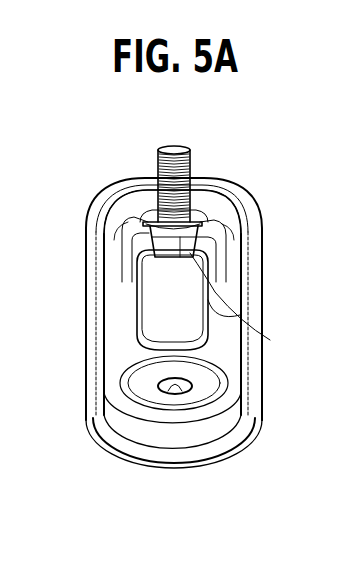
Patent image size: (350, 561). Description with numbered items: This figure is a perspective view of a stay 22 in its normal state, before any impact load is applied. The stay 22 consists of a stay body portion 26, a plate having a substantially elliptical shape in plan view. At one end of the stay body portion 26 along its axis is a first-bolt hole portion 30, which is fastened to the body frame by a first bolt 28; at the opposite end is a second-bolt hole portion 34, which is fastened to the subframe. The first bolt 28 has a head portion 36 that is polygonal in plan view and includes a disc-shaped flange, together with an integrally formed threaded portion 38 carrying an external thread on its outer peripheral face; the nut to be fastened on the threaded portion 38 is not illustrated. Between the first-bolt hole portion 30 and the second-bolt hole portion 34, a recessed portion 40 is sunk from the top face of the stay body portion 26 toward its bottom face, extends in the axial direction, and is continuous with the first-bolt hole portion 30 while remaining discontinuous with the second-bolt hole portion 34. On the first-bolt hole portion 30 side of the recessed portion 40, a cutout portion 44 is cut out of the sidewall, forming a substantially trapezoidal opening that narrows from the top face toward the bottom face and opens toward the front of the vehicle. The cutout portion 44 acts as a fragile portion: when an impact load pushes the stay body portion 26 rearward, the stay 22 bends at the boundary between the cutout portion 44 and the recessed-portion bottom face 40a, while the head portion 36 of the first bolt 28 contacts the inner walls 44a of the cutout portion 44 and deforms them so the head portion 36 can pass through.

The stay 22 is at (266, 288).
The stay body portion 26 is at (266, 411).
The first bolt 28 is at (203, 192).
The first-bolt hole portion 30 is at (201, 221).
The second-bolt hole portion 34 is at (176, 388).
The head portion 36 is at (240, 315).
The threaded portion 38 is at (190, 168).
The recessed portion 40 is at (148, 305).
The recessed-portion bottom face 40a is at (270, 340).
The cutout portion 44 is at (150, 256).
The inner walls 44a is at (148, 236).